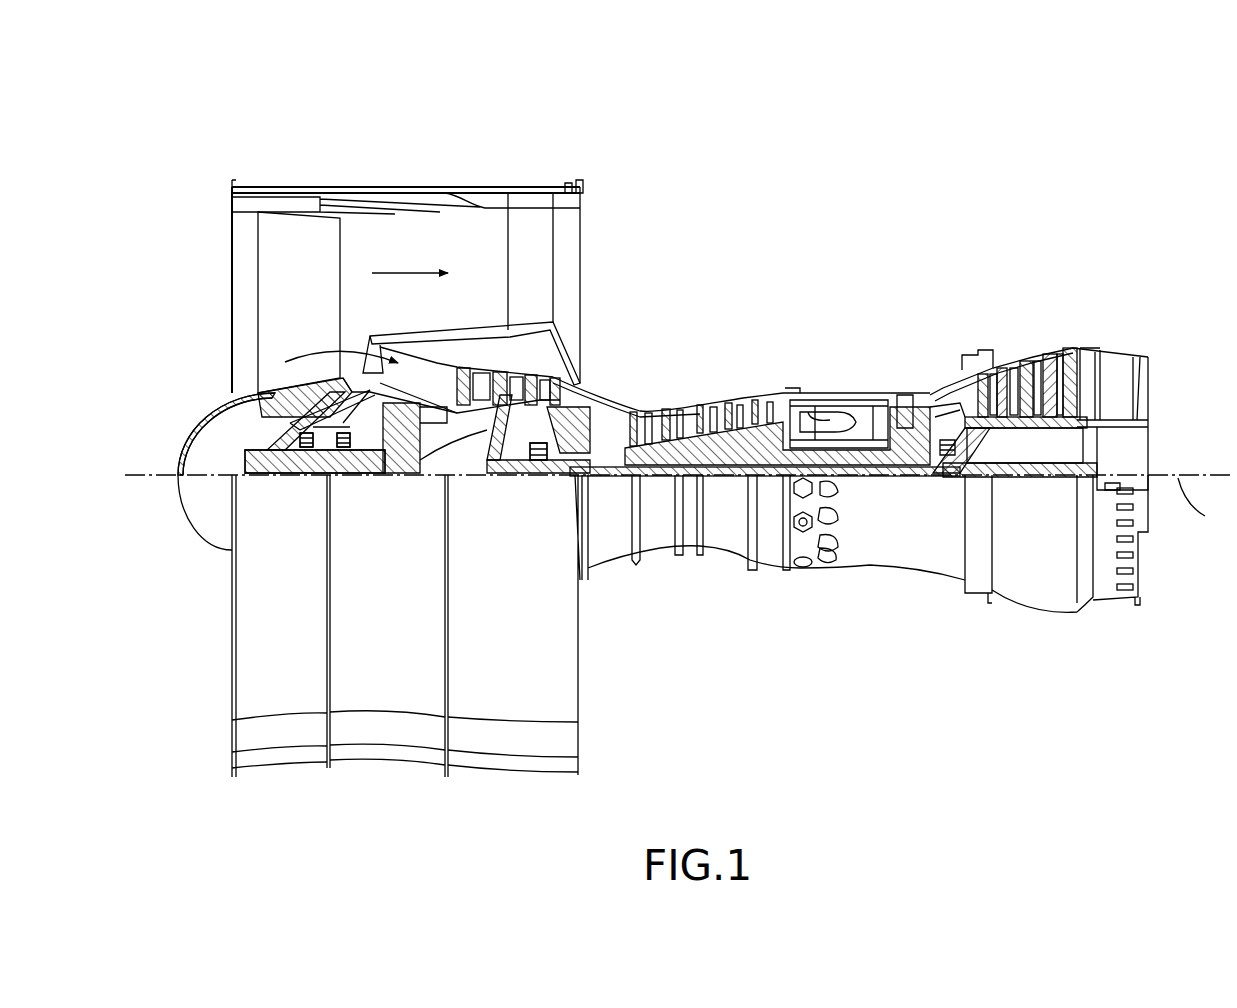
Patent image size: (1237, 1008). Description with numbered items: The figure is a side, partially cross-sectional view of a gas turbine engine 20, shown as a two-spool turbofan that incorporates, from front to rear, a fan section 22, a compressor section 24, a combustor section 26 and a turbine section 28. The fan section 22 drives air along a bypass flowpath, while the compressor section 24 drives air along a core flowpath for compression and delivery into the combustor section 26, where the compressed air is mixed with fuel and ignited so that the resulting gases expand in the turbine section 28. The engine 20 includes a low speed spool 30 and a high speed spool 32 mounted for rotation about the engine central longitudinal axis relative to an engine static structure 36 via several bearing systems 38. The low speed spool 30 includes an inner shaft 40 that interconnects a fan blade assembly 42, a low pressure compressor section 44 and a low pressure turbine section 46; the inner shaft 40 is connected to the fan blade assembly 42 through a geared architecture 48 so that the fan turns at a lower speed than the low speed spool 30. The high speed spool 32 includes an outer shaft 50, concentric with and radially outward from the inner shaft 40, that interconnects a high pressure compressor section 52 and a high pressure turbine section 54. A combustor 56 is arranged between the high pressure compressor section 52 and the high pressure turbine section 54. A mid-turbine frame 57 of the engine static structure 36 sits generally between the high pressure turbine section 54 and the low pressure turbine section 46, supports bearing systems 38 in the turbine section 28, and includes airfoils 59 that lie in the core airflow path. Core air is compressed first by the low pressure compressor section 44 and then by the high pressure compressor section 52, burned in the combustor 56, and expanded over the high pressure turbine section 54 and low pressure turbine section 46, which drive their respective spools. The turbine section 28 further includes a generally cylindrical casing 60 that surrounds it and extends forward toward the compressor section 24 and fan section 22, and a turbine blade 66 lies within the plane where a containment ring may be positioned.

The gas turbine engine 20 is at (858, 152).
The fan section 22 is at (348, 176).
The compressor section 24 is at (604, 383).
The combustor section 26 is at (820, 380).
The turbine section 28 is at (988, 338).
The low speed spool 30 is at (728, 482).
The high speed spool 32 is at (770, 445).
The engine static structure 36 is at (769, 572).
The bearing systems 38 is at (310, 480).
The inner shaft 40 is at (592, 480).
The fan blade assembly 42 is at (290, 287).
The low pressure compressor section 44 is at (482, 377).
The low pressure turbine section 46 is at (1012, 408).
The geared architecture 48 is at (375, 480).
The outer shaft 50 is at (864, 480).
The high pressure compressor section 52 is at (703, 410).
The high pressure turbine section 54 is at (905, 397).
The combustor 56 is at (840, 418).
The mid-turbine frame 57 is at (942, 386).
The airfoils 59 is at (975, 417).
The casing 60 is at (990, 408).
The turbine blade 66 is at (1032, 350).